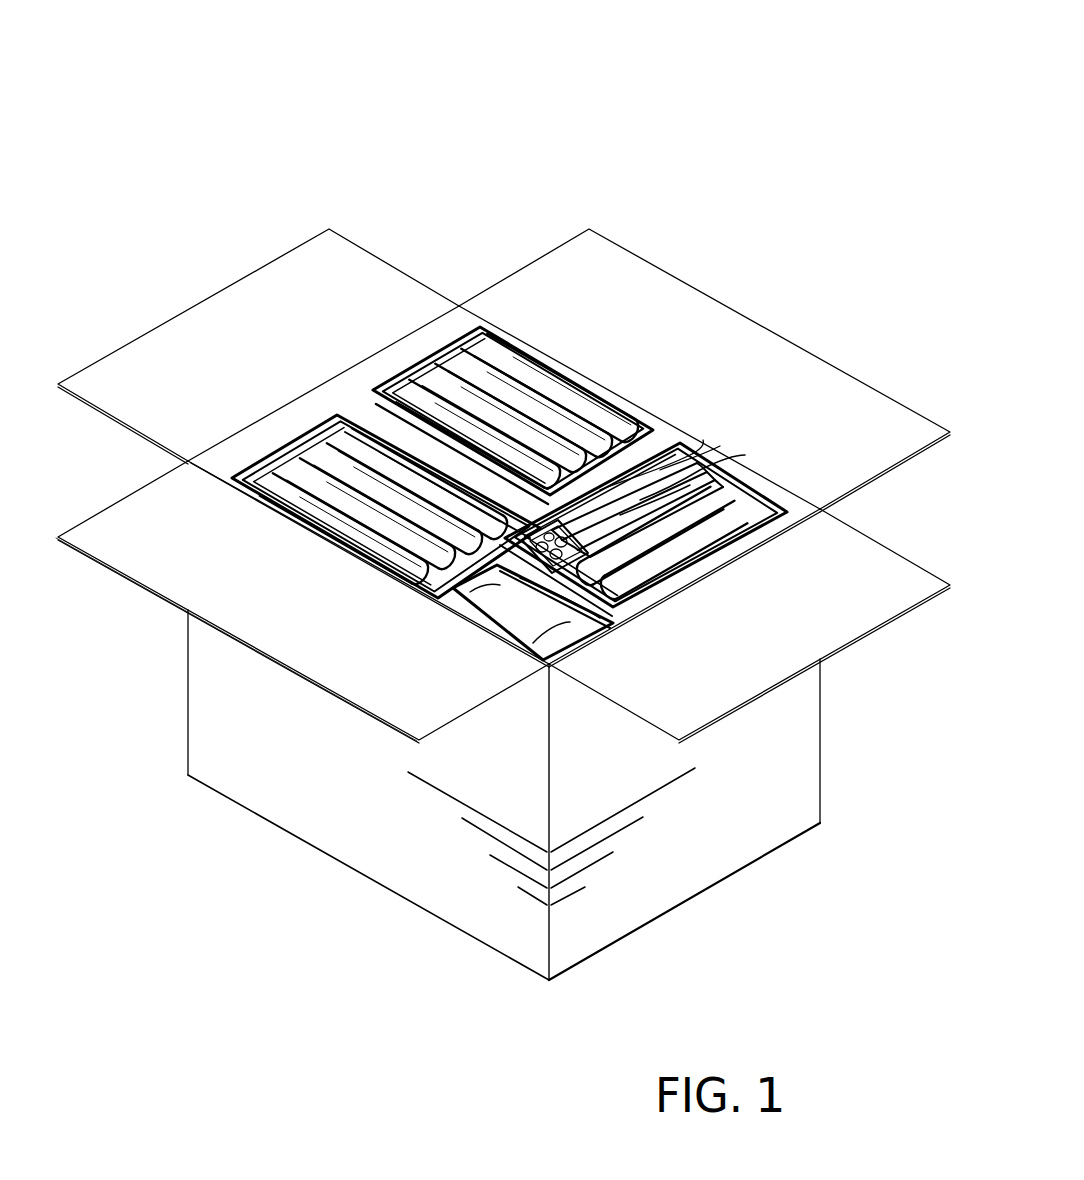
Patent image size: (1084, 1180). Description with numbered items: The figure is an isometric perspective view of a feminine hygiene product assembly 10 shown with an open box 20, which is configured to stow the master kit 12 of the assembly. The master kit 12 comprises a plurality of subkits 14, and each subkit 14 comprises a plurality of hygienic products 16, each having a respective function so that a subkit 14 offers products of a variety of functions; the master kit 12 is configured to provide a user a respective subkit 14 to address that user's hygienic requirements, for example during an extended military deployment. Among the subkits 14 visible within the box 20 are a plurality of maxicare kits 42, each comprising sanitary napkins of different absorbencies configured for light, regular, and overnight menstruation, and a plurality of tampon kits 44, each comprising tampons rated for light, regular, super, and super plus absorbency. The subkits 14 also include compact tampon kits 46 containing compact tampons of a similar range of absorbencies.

The feminine hygiene product assembly 10 is at (523, 112).
The master kit 12 is at (457, 400).
The subkit 14 is at (583, 637).
The hygienic product 16 is at (557, 547).
The box 20 is at (263, 815).
The maxicare kit 42 is at (515, 612).
The tampon kit 44 is at (527, 462).
The compact tampon kit 46 is at (240, 703).